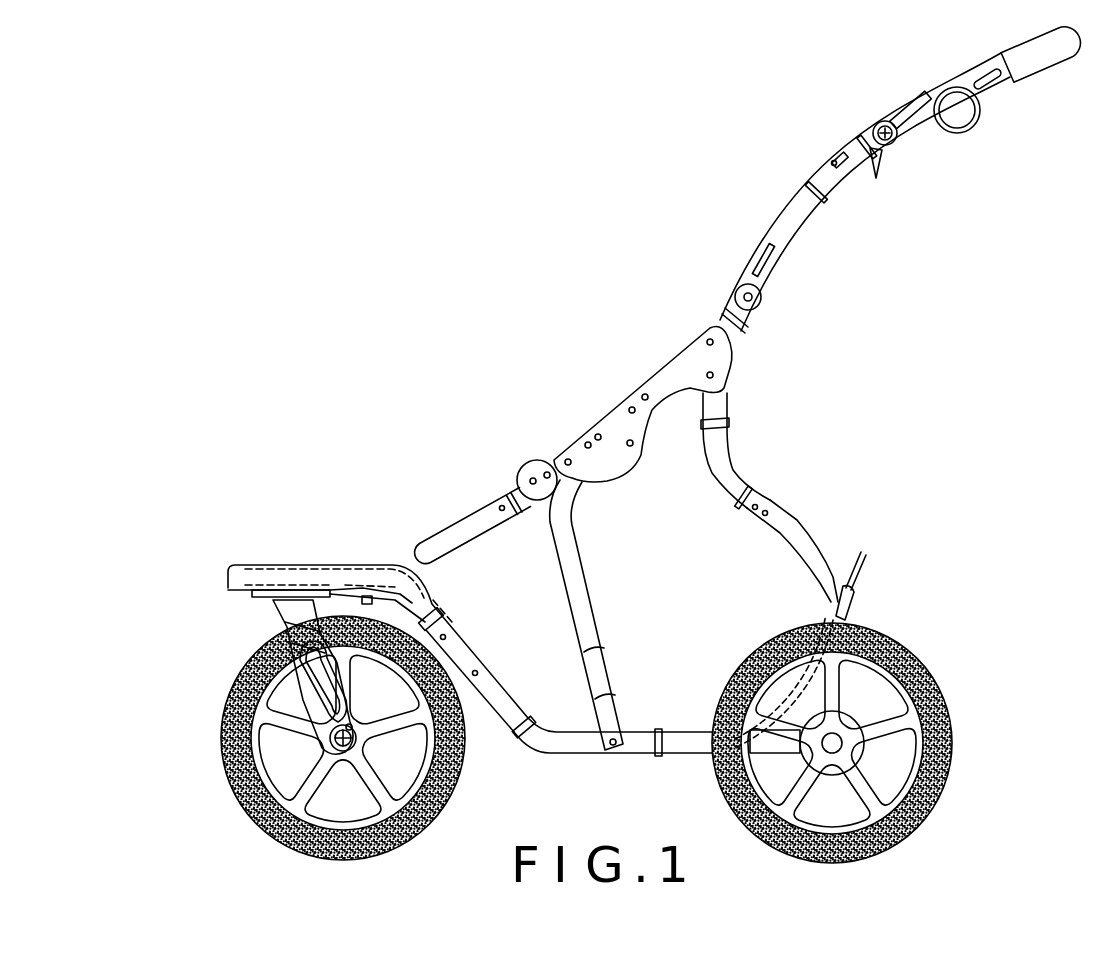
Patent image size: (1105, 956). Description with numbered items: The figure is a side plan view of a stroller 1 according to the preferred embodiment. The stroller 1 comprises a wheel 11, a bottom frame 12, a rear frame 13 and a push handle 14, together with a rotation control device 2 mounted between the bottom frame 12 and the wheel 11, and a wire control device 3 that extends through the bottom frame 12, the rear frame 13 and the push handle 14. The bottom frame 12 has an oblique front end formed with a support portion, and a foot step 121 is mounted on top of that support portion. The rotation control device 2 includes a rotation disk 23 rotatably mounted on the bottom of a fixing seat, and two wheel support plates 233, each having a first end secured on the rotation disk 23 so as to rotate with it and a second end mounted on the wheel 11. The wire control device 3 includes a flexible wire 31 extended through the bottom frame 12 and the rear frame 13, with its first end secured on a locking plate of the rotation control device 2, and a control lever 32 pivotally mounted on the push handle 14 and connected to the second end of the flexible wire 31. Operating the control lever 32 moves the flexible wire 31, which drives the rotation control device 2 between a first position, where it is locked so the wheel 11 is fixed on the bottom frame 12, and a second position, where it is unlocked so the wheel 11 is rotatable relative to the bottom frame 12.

The stroller 1 is at (559, 381).
The wheel 11 is at (226, 770).
The bottom frame 12 is at (683, 740).
The foot step 121 is at (330, 573).
The rear frame 13 is at (800, 547).
The push handle 14 is at (792, 220).
The rotation control device 2 is at (258, 600).
The rotation disk 23 is at (268, 598).
The wheel support plates 233 is at (317, 668).
The wire control device 3 is at (990, 192).
The flexible wire 31 is at (737, 465).
The control lever 32 is at (917, 130).